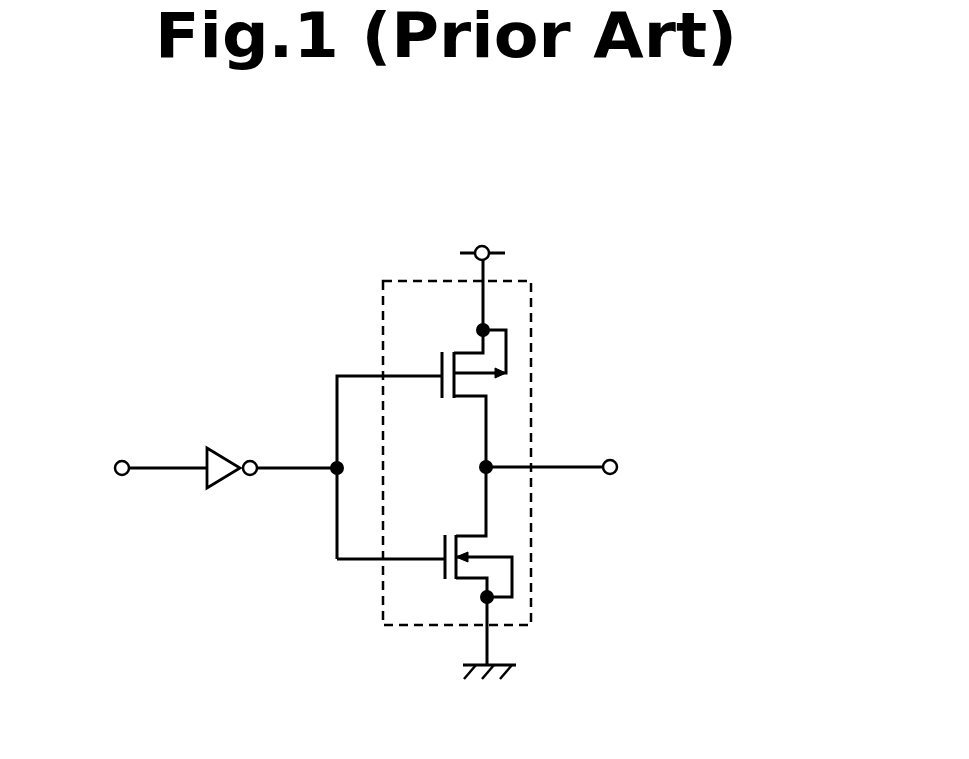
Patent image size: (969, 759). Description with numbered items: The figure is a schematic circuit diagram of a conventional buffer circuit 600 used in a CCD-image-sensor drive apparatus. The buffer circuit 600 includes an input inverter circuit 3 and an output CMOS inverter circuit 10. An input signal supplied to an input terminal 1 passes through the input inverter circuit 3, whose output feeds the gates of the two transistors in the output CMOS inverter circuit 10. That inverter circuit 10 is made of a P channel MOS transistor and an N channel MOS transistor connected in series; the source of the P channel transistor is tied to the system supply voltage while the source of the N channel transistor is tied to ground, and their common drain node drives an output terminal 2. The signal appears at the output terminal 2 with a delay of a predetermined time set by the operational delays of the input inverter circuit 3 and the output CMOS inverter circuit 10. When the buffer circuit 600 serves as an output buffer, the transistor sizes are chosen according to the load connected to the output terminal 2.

The input terminal 1 is at (128, 460).
The output terminal 2 is at (614, 459).
The input inverter circuit 3 is at (231, 449).
The output CMOS inverter circuit 10 is at (522, 280).
The buffer circuit 600 is at (435, 445).